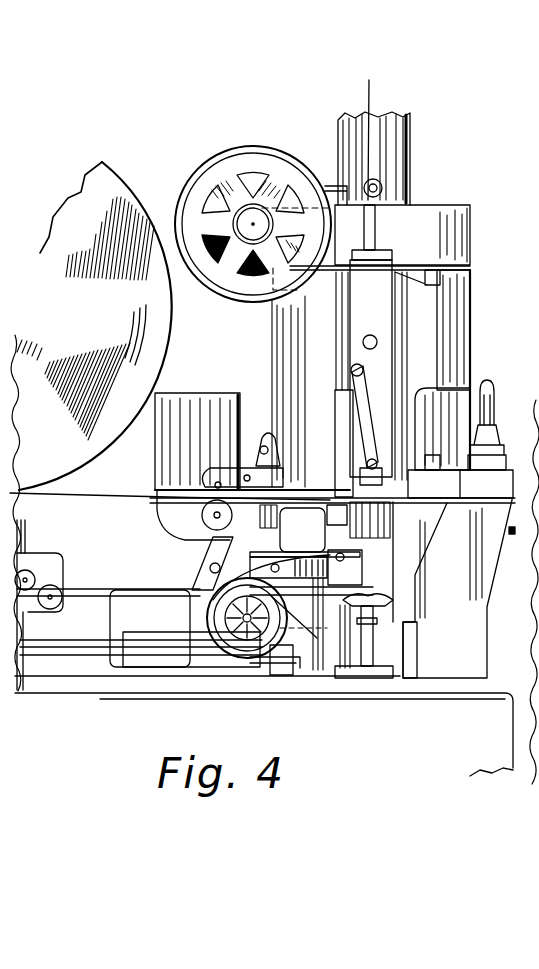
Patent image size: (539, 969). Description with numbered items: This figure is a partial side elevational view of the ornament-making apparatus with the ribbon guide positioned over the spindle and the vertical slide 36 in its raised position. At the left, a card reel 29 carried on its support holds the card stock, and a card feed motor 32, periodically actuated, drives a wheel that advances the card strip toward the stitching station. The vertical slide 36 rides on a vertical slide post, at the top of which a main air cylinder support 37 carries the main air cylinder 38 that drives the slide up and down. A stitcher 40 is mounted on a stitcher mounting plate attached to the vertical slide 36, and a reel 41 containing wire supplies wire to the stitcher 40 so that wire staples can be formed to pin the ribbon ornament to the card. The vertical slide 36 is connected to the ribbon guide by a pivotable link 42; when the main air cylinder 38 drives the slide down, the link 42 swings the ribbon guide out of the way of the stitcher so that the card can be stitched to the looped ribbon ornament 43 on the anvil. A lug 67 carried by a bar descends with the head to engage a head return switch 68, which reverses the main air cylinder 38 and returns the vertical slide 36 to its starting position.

The card reel 29 is at (158, 335).
The card feed motor 32 is at (183, 398).
The vertical slide 36 is at (470, 280).
The main air cylinder support 37 is at (420, 212).
The main air cylinder 38 is at (345, 148).
The stitcher 40 is at (383, 365).
The reel 41 is at (238, 162).
The pivotable link 42 is at (207, 551).
The looped ribbon ornament 43 is at (370, 603).
The lug 67 is at (437, 280).
The head return switch 68 is at (422, 460).